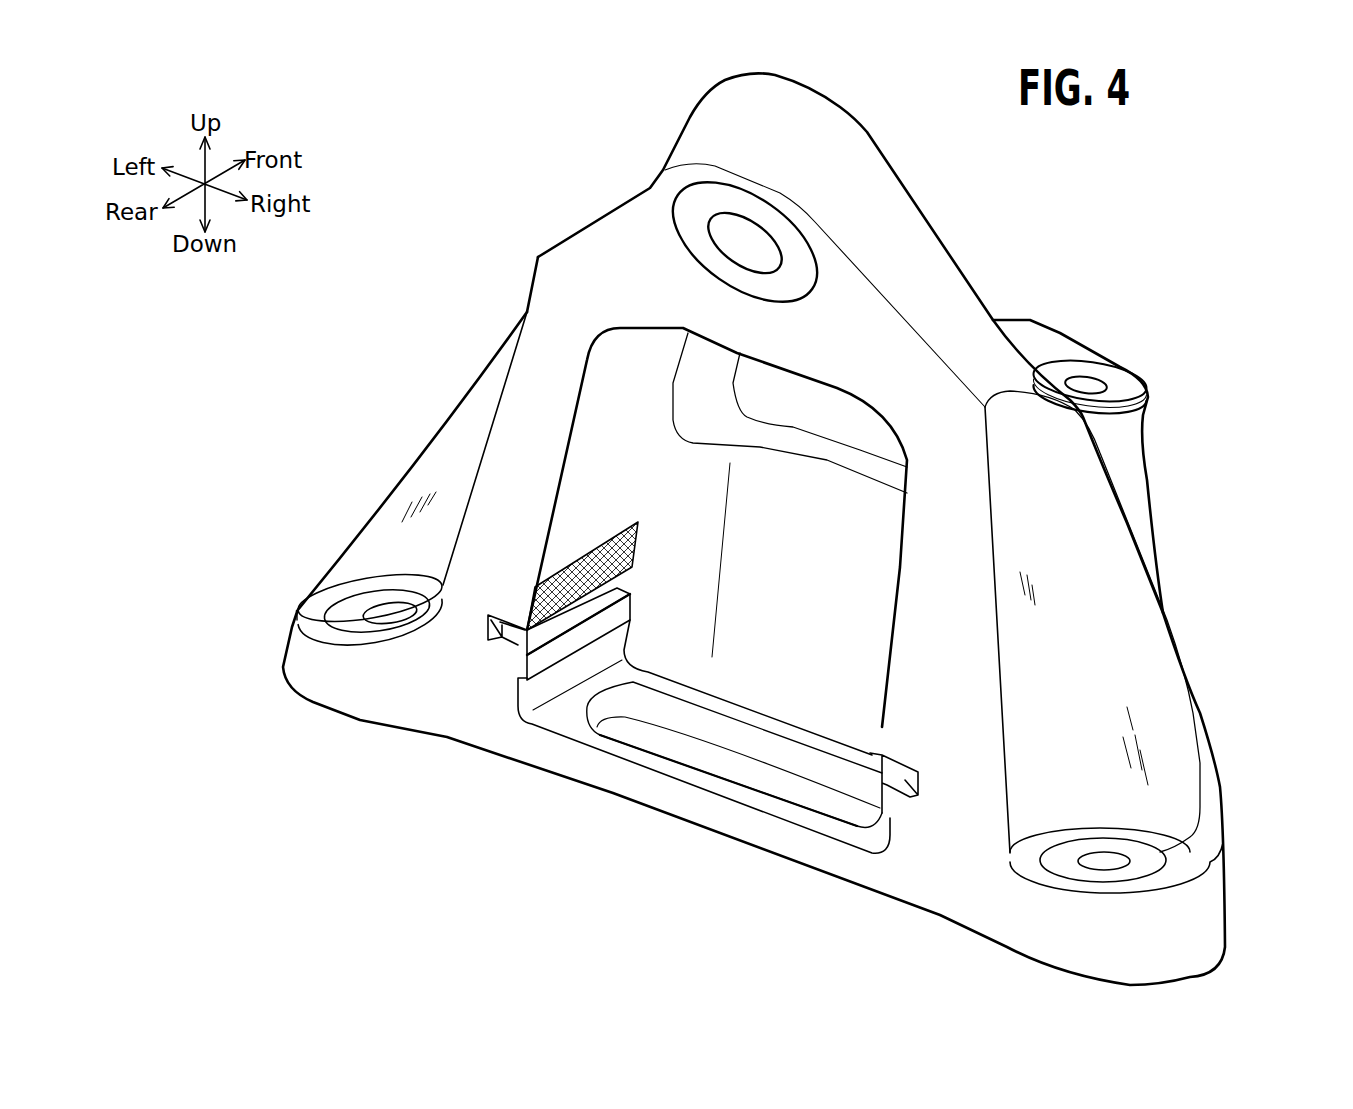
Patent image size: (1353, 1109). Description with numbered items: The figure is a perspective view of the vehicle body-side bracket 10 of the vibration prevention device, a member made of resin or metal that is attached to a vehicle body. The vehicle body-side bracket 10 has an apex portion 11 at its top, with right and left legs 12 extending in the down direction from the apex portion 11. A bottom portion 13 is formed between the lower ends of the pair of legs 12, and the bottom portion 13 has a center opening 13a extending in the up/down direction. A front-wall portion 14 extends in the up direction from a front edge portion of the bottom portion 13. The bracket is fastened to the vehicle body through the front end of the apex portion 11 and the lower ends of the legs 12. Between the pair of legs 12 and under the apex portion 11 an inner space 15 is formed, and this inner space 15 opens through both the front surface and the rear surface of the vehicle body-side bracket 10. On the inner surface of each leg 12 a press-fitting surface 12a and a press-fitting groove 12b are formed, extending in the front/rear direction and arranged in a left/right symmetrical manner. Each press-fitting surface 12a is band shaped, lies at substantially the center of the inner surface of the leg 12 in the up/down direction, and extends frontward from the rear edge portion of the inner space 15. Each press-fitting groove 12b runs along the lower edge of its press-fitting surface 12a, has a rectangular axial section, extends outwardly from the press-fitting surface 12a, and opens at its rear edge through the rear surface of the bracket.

The vehicle body-side bracket 10 is at (635, 160).
The apex portion 11 is at (888, 222).
The leg 12 is at (450, 453).
The press-fitting surface 12a is at (595, 603).
The press-fitting groove 12b is at (500, 648).
The bottom portion 13 is at (623, 780).
The center opening 13a is at (672, 738).
The front-wall portion 14 is at (817, 678).
The inner space 15 is at (622, 378).